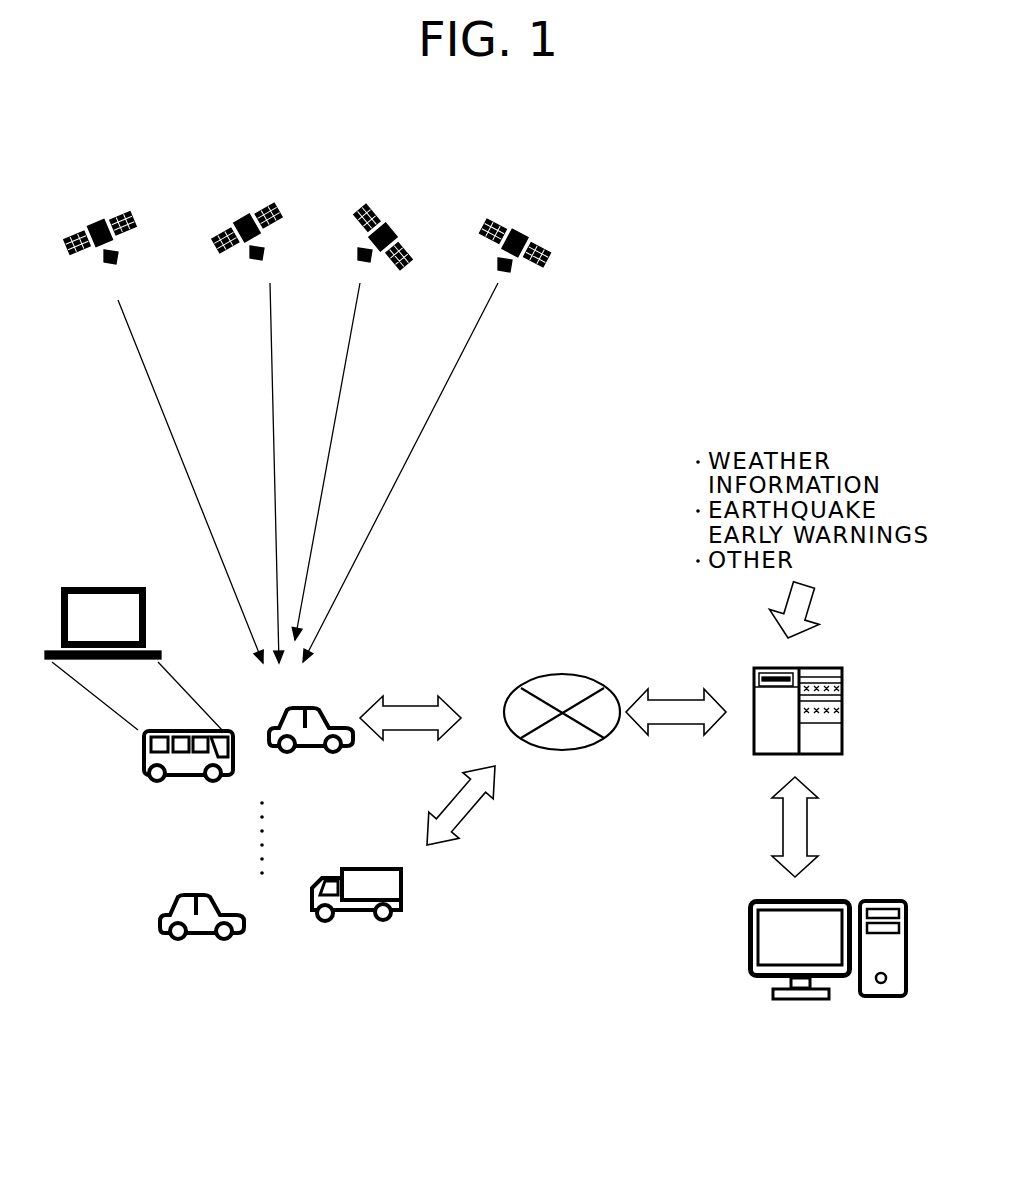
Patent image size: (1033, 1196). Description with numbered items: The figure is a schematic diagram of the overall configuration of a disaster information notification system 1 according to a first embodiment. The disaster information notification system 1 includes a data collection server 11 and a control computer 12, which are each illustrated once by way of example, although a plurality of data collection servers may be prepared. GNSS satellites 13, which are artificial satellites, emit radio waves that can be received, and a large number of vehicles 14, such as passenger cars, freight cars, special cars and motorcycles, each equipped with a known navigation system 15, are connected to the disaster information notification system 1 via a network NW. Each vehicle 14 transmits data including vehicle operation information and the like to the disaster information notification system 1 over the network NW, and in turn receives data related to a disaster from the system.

The disaster information notification system 1 is at (732, 302).
The data collection server 11 is at (812, 668).
The control computer 12 is at (816, 898).
The GNSS satellites 13 is at (570, 196).
The vehicles 14 is at (398, 955).
The navigation system 15 is at (93, 586).
The network NW is at (566, 675).